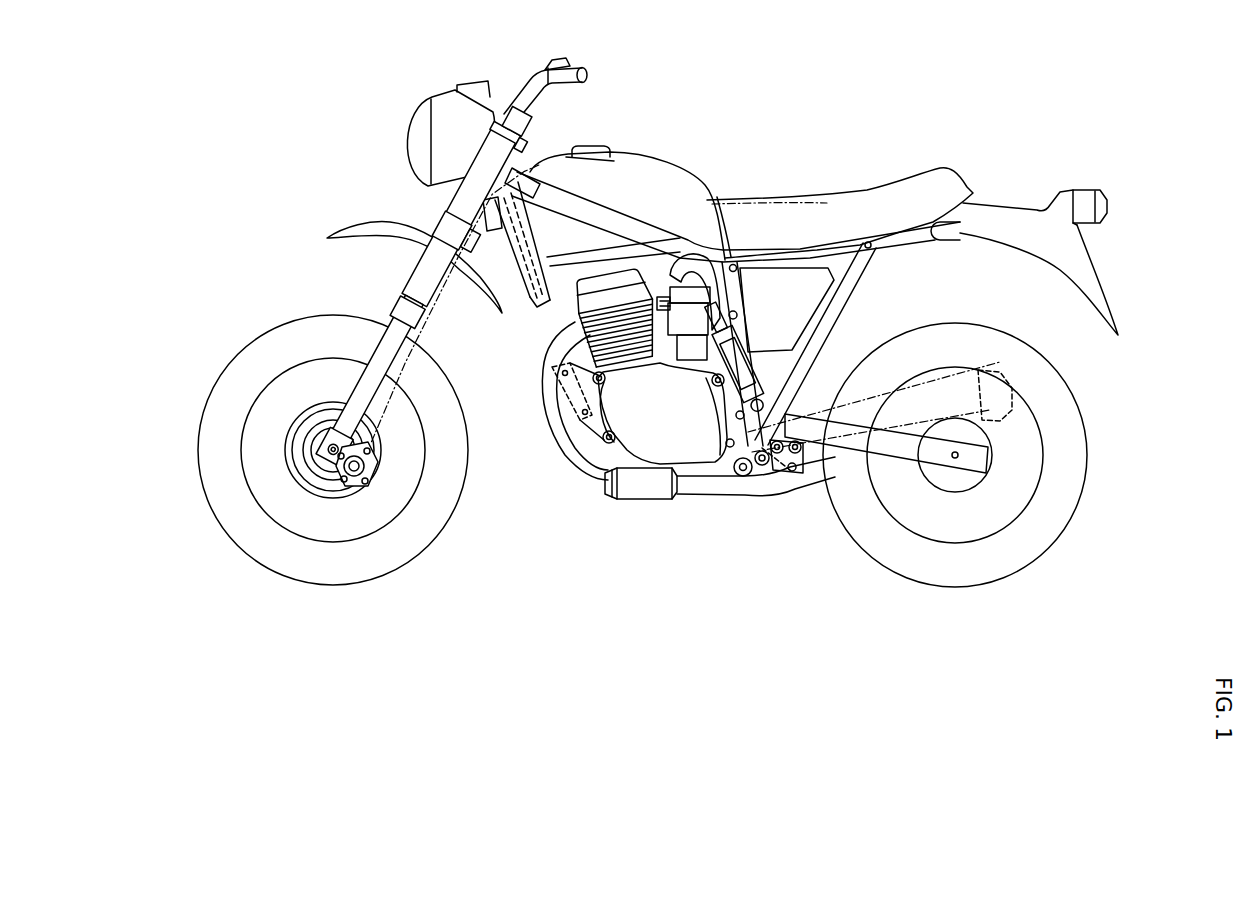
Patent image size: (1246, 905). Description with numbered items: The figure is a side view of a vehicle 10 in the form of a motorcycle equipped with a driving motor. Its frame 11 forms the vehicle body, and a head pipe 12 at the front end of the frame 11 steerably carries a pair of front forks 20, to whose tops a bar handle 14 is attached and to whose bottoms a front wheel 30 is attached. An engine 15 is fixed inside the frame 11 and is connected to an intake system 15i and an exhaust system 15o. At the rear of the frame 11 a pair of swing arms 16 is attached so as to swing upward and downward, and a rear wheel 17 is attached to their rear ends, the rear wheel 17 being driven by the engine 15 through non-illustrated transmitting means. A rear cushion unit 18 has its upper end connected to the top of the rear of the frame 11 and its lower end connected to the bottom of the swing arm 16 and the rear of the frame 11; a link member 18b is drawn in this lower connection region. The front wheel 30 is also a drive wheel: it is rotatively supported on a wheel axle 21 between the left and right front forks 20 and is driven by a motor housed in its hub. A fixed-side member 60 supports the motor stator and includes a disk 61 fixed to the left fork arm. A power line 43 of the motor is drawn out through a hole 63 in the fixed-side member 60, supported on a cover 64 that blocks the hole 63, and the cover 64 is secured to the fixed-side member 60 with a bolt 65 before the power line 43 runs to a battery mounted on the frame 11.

The vehicle 10 is at (290, 105).
The frame 11 is at (613, 212).
The head pipe 12 is at (477, 210).
The bar handle 14 is at (523, 90).
The engine 15 is at (655, 445).
The intake system 15i is at (677, 297).
The exhaust system 15o is at (558, 440).
The swing arms 16 is at (912, 458).
The rear wheel 17 is at (993, 583).
The rear cushion unit 18 is at (775, 365).
The link mechanism 18b is at (767, 480).
The front forks 20 is at (390, 313).
The wheel axle 21 is at (323, 463).
The front wheel 30 is at (247, 343).
The power line 43 is at (437, 297).
The fixed-side member 60 is at (330, 480).
The disk 61 is at (303, 410).
The hole 63 is at (363, 487).
The cover 64 is at (360, 473).
The bolt 65 is at (347, 473).